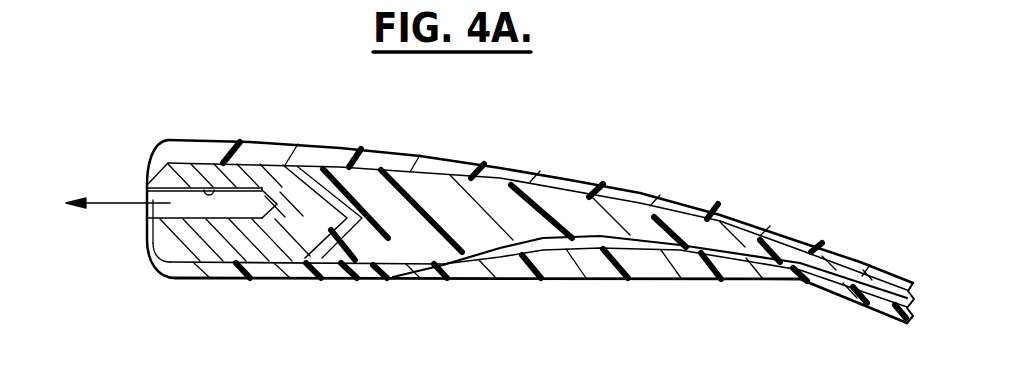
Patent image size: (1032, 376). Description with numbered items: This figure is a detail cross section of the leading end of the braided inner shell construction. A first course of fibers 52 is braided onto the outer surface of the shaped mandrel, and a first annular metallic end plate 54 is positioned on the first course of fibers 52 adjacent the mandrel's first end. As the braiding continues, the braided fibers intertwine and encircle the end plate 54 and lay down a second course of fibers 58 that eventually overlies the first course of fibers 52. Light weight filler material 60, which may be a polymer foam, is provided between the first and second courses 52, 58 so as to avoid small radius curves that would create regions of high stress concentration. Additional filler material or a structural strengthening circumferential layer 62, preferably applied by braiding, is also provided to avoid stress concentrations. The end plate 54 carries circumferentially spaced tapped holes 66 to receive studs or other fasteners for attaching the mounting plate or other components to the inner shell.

The first course of fibers 52 is at (337, 267).
The first annular metallic end plate 54 is at (215, 240).
The second course of fibers 58 is at (632, 192).
The filler material 60 is at (493, 197).
The structural strengthening circumferential layer 62 is at (642, 265).
The tapped holes 66 is at (210, 186).